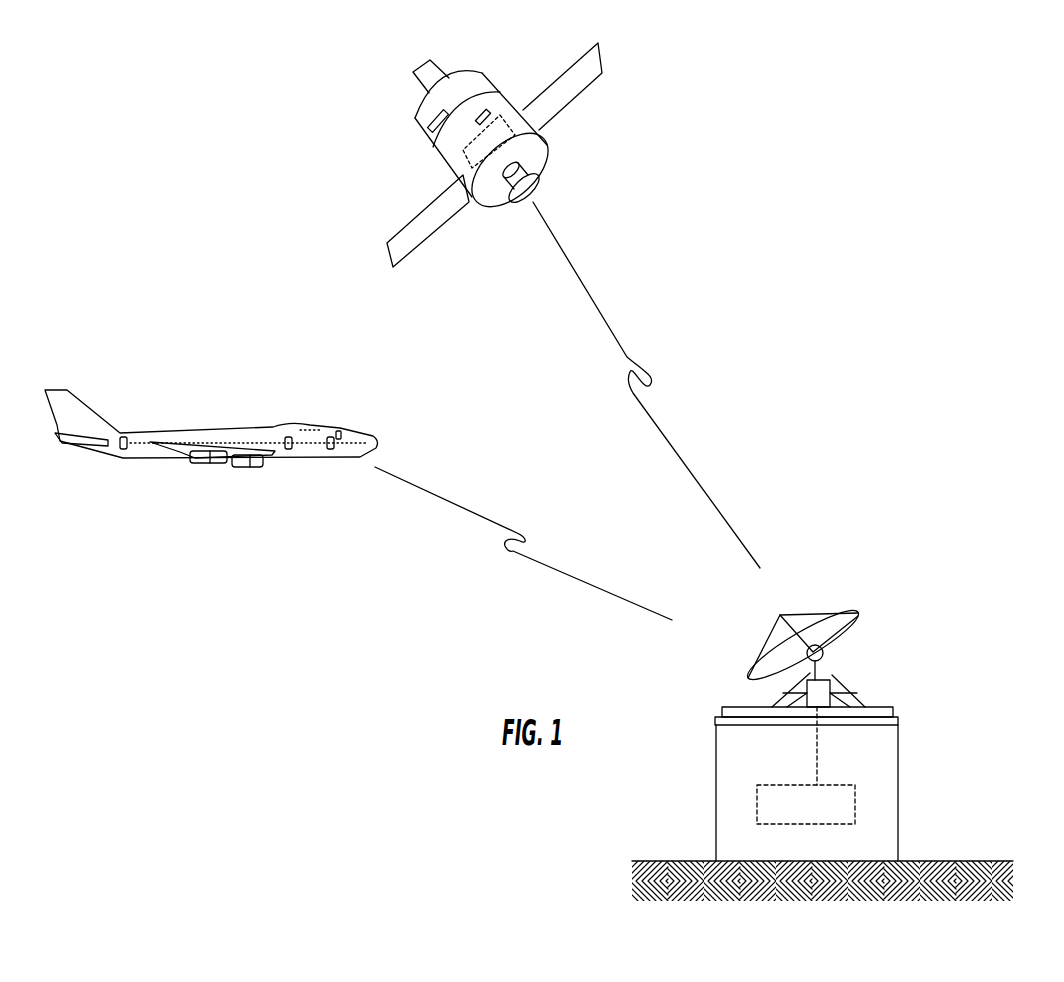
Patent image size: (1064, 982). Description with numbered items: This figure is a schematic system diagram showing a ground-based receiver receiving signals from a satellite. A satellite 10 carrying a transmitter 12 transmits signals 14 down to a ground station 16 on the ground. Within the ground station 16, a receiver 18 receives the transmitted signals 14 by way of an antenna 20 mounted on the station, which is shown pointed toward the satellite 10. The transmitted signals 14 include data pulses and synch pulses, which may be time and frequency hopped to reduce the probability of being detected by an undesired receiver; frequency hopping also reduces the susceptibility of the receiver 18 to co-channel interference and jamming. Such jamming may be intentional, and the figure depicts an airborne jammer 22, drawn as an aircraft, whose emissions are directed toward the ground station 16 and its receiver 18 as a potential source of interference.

The satellite 10 is at (468, 62).
The transmitter 12 is at (515, 133).
The transmitted signals 14 is at (625, 330).
The ground station 16 is at (900, 735).
The receiver 18 is at (855, 793).
The antenna 20 is at (857, 615).
The airborne jammer 22 is at (177, 462).